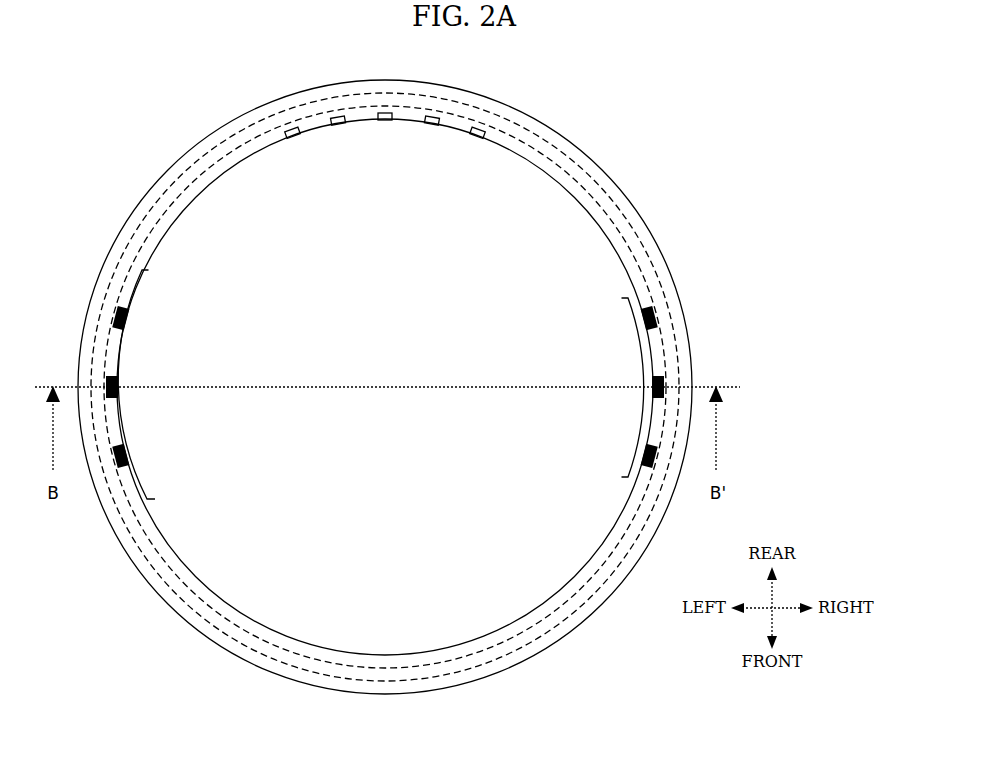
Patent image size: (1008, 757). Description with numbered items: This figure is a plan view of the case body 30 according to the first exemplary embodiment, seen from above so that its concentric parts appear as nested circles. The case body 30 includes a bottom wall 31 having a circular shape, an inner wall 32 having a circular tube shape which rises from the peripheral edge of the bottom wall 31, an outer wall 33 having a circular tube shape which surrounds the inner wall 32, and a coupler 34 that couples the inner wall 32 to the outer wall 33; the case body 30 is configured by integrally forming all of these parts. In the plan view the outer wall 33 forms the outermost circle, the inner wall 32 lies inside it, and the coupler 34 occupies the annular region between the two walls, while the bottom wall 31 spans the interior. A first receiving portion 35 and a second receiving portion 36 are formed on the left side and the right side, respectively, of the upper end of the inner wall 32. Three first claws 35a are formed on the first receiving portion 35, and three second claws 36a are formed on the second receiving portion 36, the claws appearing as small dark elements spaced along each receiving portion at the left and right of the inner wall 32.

The case body 30 is at (175, 152).
The bottom wall 31 is at (208, 253).
The inner wall 32 is at (578, 197).
The outer wall 33 is at (603, 168).
The coupler 34 is at (632, 232).
The first receiving portion 35 is at (130, 497).
The first claws 35a is at (125, 320).
The second receiving portion 36 is at (660, 347).
The second claws 36a is at (645, 320).